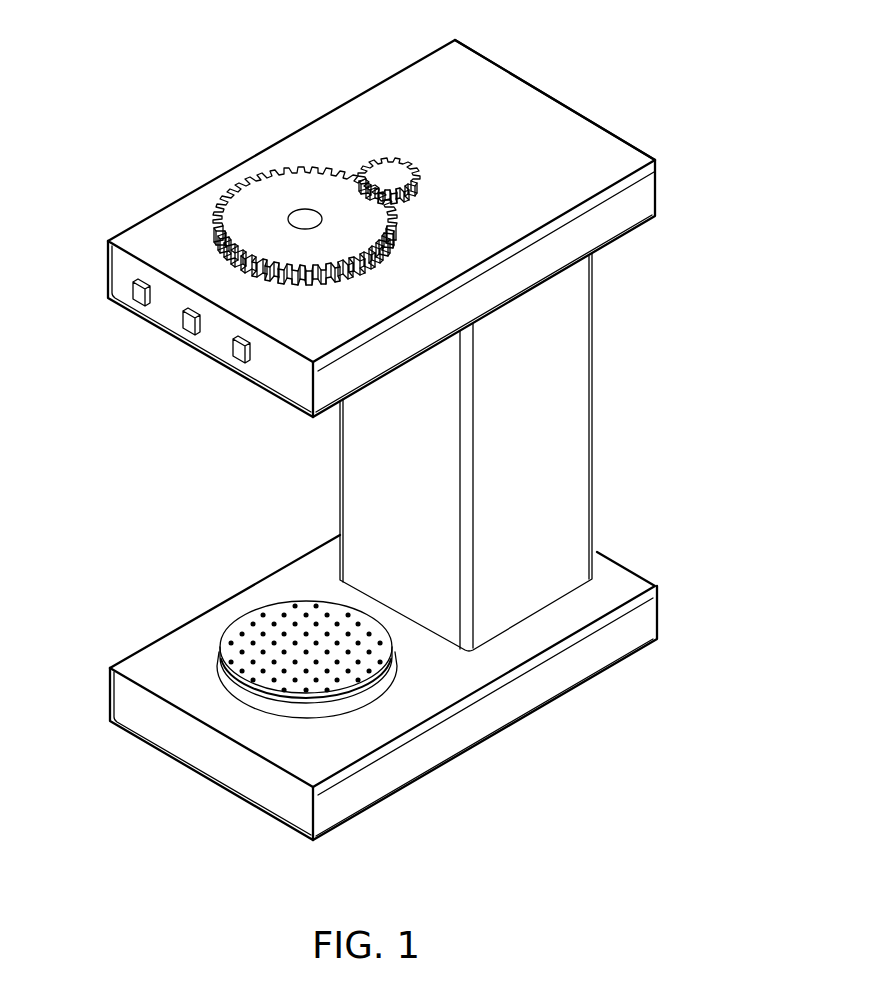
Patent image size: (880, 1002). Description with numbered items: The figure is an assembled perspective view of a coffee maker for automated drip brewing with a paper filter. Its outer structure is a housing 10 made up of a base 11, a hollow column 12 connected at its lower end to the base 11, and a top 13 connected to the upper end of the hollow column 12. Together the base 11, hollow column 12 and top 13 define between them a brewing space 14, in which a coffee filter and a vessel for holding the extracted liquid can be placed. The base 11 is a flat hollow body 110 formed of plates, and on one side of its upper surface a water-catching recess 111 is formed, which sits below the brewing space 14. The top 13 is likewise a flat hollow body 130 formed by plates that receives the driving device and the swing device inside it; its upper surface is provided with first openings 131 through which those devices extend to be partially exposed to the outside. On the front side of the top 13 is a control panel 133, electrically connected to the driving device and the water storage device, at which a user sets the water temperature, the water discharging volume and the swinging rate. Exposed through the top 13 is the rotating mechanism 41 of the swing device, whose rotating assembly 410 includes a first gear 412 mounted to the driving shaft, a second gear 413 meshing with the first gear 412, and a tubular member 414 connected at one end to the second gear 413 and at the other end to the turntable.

The housing 10 is at (648, 447).
The base 11 is at (477, 748).
The flat hollow body 110 is at (185, 664).
The water-catching recess 111 is at (247, 615).
The hollow column 12 is at (372, 437).
The top 13 is at (615, 134).
The flat hollow body 130 is at (620, 213).
The first openings 131 is at (413, 199).
The control panel 133 is at (167, 317).
The brewing space 14 is at (267, 528).
The rotating mechanism 41 is at (290, 155).
The rotating assembly 410 is at (317, 167).
The first gear 412 is at (393, 168).
The second gear 413 is at (245, 213).
The tubular member 414 is at (292, 219).